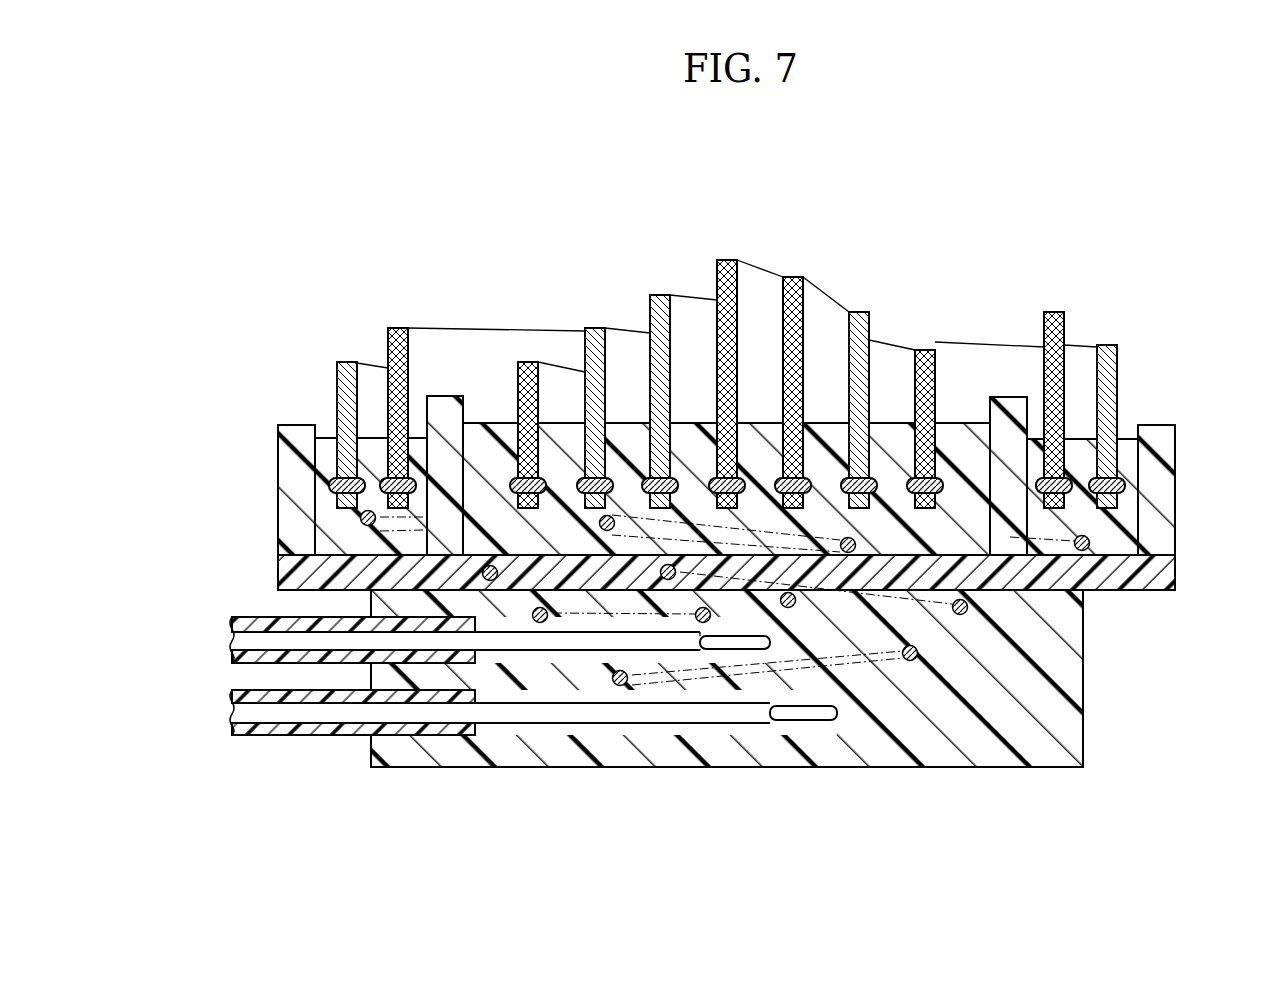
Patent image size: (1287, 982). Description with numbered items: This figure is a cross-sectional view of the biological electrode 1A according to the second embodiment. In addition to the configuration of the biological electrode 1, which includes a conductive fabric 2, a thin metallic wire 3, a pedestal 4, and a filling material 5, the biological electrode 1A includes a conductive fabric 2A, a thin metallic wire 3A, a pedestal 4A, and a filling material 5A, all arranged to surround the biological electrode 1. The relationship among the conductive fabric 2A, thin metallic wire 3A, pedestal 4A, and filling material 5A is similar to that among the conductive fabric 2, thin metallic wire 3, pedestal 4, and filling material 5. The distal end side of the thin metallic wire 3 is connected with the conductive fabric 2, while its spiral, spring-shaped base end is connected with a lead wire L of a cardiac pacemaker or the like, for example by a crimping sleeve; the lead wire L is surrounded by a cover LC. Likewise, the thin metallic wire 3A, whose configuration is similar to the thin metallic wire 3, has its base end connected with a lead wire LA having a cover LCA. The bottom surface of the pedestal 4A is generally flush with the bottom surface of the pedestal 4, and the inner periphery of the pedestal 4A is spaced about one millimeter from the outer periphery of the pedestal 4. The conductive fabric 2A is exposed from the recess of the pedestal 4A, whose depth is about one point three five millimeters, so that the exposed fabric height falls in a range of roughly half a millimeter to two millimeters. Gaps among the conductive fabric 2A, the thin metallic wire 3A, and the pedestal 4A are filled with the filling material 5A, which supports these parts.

The biological electrode 1 is at (721, 253).
The biological electrode 1A is at (966, 233).
The conductive fabric 2 is at (760, 265).
The conductive fabric 2A is at (399, 328).
The thin metallic wire 3 is at (875, 480).
The thin metallic wire 3A is at (340, 487).
The pedestal 4 is at (1018, 397).
The pedestal 4A is at (278, 497).
The filling material 5 is at (973, 432).
The filling material 5A is at (330, 438).
The lead wire L is at (510, 640).
The lead wire LA is at (583, 712).
The cover LC is at (337, 657).
The cover LCA is at (290, 735).